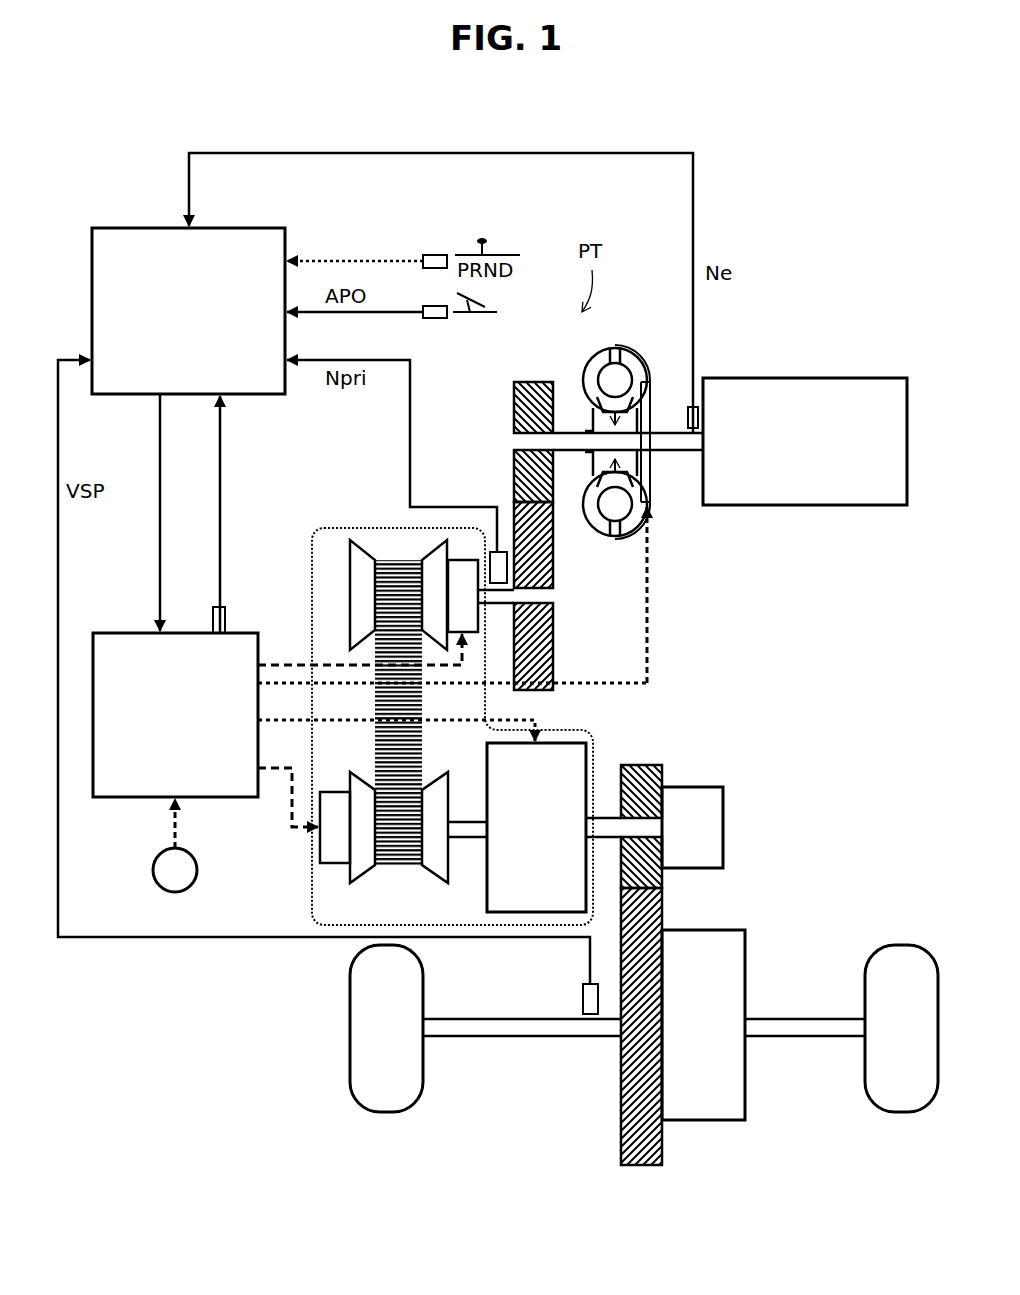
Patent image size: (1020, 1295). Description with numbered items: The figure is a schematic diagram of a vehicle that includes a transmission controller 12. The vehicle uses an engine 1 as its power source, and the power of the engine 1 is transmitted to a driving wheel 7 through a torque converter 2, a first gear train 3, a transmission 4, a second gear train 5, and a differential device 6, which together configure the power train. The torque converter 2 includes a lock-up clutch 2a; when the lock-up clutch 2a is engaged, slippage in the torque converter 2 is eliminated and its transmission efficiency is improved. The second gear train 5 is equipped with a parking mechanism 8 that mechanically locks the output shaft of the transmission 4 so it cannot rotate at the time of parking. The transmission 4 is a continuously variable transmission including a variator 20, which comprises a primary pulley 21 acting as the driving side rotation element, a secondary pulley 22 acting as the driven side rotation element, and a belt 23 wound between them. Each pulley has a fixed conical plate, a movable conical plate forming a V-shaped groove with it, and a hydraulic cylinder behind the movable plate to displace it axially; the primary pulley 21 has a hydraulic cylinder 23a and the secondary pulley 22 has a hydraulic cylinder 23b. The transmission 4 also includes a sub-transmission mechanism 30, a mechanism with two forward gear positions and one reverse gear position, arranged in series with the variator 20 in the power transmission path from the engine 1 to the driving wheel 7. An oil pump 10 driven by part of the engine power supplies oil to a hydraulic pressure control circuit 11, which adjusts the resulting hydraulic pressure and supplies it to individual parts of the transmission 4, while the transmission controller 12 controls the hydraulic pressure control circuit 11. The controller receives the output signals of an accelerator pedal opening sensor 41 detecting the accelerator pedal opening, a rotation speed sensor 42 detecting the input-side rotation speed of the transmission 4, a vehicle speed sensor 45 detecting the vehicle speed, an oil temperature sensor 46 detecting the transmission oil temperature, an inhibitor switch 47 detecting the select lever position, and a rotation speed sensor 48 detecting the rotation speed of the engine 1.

The engine 1 is at (872, 382).
The torque converter 2 is at (647, 364).
The lock-up clutch 2a is at (645, 472).
The first gear train 3 is at (532, 376).
The transmission 4 is at (352, 528).
The second gear train 5 is at (644, 1174).
The differential device 6 is at (715, 1112).
The driving wheel 7 is at (390, 1103).
The parking mechanism 8 is at (712, 805).
The oil pump 10 is at (156, 863).
The hydraulic pressure control circuit 11 is at (121, 638).
The transmission controller 12 is at (242, 228).
The variator 20 is at (353, 678).
The primary pulley 21 is at (358, 583).
The secondary pulley 22 is at (362, 848).
The belt 23 is at (400, 560).
The hydraulic cylinder 23a is at (465, 565).
The hydraulic cylinder 23b is at (330, 832).
The sub-transmission mechanism 30 is at (580, 752).
The accelerator pedal opening sensor 41 is at (437, 318).
The rotation speed sensor 42 is at (497, 552).
The vehicle speed sensor 45 is at (588, 1000).
The oil temperature sensor 46 is at (225, 618).
The inhibitor switch 47 is at (437, 255).
The rotation speed sensor 48 is at (691, 407).